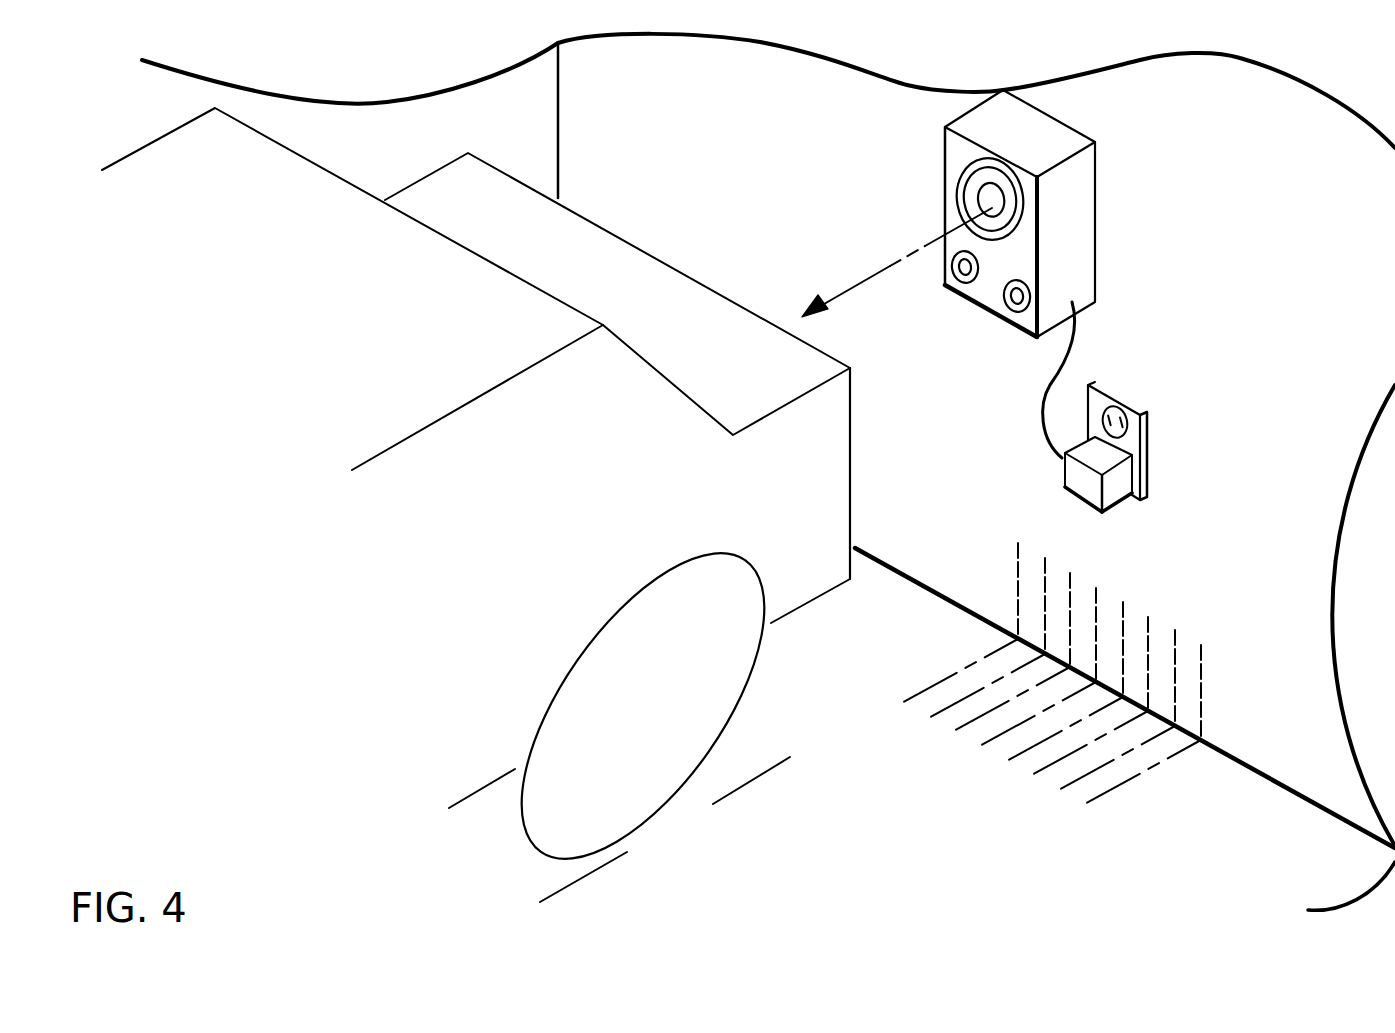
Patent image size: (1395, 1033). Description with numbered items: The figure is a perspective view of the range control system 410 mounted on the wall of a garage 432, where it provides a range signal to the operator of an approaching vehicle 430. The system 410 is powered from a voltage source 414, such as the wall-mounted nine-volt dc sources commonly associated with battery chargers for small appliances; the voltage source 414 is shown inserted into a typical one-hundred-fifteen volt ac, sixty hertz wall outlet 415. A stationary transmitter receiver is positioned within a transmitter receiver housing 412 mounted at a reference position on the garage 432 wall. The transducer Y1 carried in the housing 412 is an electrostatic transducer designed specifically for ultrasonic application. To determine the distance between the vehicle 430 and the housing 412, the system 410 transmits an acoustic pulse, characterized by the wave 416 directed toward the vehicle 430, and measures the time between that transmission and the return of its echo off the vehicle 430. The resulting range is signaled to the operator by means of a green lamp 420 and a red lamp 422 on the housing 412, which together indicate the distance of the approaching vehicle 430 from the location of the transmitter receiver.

The range control system 410 is at (1245, 176).
The transmitter receiver housing 412 is at (1082, 207).
The voltage source 414 is at (1115, 490).
The wall outlet 415 is at (1140, 407).
The wave 416 is at (892, 265).
The green lamp 420 is at (955, 273).
The red lamp 422 is at (1013, 300).
The vehicle 430 is at (810, 455).
The garage 432 is at (810, 198).
The transducer Y1 is at (980, 198).